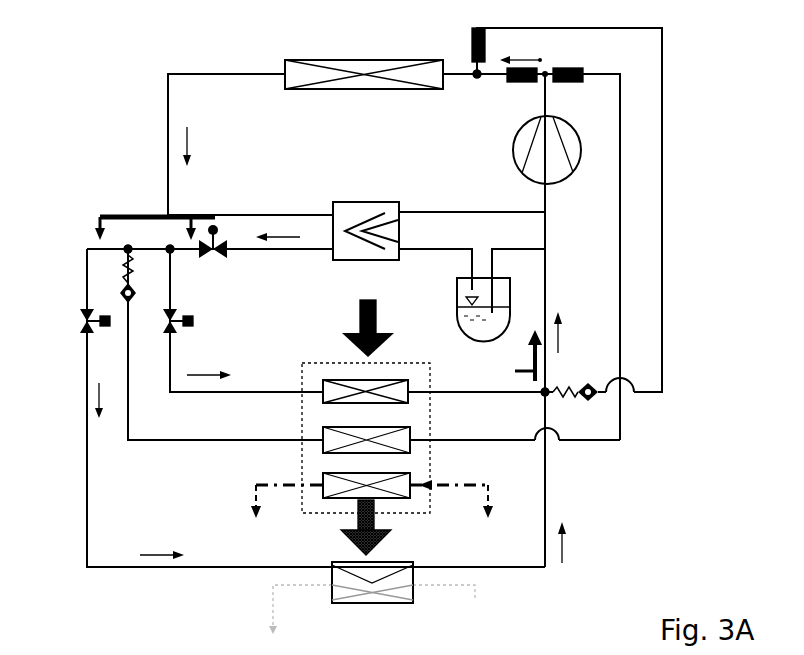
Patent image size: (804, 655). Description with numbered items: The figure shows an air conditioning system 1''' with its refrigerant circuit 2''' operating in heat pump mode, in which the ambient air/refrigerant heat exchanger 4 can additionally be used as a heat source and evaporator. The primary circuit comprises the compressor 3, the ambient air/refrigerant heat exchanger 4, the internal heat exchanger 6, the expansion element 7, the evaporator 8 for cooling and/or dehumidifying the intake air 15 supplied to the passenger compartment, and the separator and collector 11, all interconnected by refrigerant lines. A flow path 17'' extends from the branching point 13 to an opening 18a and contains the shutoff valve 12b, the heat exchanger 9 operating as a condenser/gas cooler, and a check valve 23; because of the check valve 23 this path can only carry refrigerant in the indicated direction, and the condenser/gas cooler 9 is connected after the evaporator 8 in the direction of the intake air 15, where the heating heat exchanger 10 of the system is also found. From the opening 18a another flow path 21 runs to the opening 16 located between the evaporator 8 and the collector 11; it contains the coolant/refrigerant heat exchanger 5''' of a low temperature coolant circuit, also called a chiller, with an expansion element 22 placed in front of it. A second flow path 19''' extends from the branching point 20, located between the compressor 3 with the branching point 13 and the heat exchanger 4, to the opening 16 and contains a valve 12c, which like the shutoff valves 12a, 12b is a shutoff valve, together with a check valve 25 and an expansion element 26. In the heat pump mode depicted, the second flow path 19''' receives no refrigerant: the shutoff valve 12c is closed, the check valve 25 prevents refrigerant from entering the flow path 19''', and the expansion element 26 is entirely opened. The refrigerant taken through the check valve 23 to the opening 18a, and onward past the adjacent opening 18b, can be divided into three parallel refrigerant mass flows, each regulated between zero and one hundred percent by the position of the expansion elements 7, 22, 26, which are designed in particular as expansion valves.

The air conditioning system 1''' is at (470, 83).
The refrigerant circuit 2''' is at (720, 241).
The compressor 3 is at (513, 163).
The ambient air/refrigerant heat exchanger 4 is at (290, 62).
The coolant/refrigerant heat exchanger 5''' is at (406, 602).
The internal heat exchanger 6 is at (375, 205).
The expansion element 7 is at (197, 322).
The evaporator 8 is at (327, 383).
The heat exchanger operating as condenser/gas cooler 9 is at (327, 430).
The heating heat exchanger 10 is at (402, 487).
The separator and collector 11 is at (462, 323).
The shutoff valve 12a is at (507, 78).
The shutoff valve 12b is at (585, 68).
The shutoff valve 12c is at (470, 46).
The branching point 13 is at (544, 77).
The intake air 15 is at (360, 320).
The opening 16 is at (542, 393).
The flow path 17'' is at (665, 272).
The opening 18a is at (128, 250).
The branch point 18b is at (170, 250).
The second flow path 19''' is at (710, 212).
The branching point 20 is at (475, 78).
The flow path 21 is at (545, 473).
The expansion element 22 is at (83, 330).
The check valve 23 is at (128, 303).
The check valve 25 is at (588, 380).
The expansion element 26 is at (215, 216).